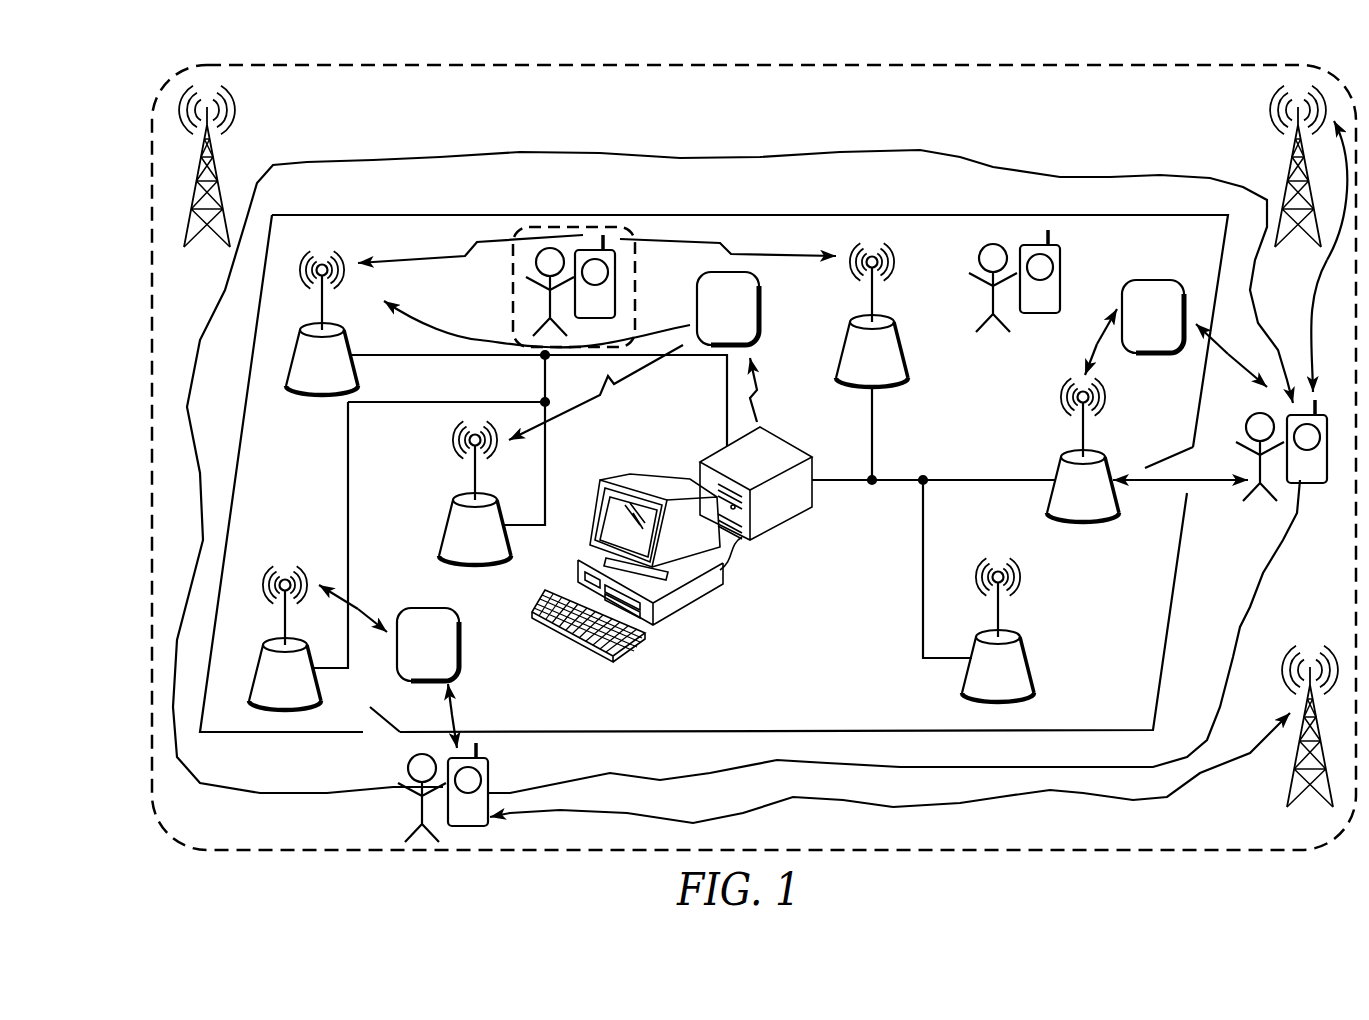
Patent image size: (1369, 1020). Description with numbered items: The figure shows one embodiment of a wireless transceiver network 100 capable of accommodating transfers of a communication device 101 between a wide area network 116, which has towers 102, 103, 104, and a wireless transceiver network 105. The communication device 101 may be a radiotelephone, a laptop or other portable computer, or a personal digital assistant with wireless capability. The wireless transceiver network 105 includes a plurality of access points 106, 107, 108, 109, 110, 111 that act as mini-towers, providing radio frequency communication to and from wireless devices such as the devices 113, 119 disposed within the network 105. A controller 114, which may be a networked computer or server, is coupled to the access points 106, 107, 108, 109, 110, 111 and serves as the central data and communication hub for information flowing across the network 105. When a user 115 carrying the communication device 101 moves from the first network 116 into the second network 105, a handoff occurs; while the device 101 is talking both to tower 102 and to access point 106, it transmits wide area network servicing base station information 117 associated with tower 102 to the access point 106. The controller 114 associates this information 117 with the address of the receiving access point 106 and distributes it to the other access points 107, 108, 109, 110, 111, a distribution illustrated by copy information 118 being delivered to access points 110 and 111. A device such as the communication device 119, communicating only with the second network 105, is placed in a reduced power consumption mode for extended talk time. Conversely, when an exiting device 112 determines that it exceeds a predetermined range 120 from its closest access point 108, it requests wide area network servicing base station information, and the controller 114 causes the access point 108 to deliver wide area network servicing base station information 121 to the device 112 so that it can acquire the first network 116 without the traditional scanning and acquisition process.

The wireless transceiver network 100 is at (120, 66).
The communication device 101 is at (490, 771).
The tower 102 is at (1292, 782).
The tower 103 is at (1290, 150).
The tower 104 is at (214, 151).
The wireless transceiver network 105 is at (296, 797).
The access point 106 is at (311, 653).
The access point 107 is at (1023, 648).
The access point 108 is at (1109, 463).
The access point 109 is at (897, 333).
The access point 110 is at (502, 509).
The access point 111 is at (349, 341).
The exiting communication device 112 is at (1328, 476).
The wireless device 113 is at (1052, 245).
The controller 114 is at (693, 604).
The user 115 is at (420, 816).
The wide area network 116 is at (348, 121).
The wide area network servicing base station information 117 is at (433, 607).
The copy information 118 is at (760, 300).
The communication device 119 is at (596, 271).
The predetermined range 120 is at (1217, 483).
The wide area network servicing base station information 121 is at (1153, 282).